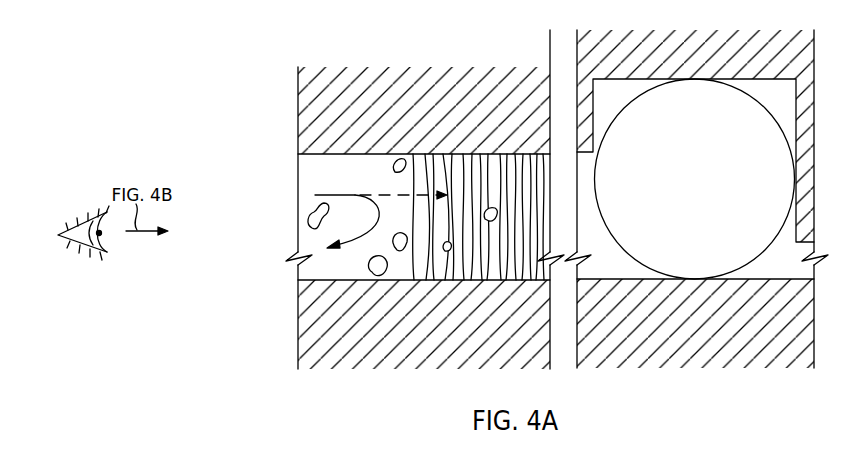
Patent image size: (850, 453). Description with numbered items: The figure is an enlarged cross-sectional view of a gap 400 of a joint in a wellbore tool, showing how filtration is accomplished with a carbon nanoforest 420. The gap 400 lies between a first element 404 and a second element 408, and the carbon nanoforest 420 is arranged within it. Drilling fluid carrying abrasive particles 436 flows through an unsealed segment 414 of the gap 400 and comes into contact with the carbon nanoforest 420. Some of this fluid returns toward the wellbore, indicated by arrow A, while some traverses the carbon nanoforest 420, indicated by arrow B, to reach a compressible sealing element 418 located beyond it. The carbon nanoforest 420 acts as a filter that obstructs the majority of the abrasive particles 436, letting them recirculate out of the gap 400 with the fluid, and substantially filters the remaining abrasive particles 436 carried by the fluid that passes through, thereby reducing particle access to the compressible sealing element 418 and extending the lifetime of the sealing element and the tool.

The gap 400 is at (217, 237).
The unsealed segment 414 is at (255, 237).
The first element 404 is at (427, 111).
The second element 408 is at (433, 349).
The compressible sealing element 418 is at (679, 195).
The carbon nanoforest 420 is at (487, 140).
The abrasive particles 436 is at (373, 276).